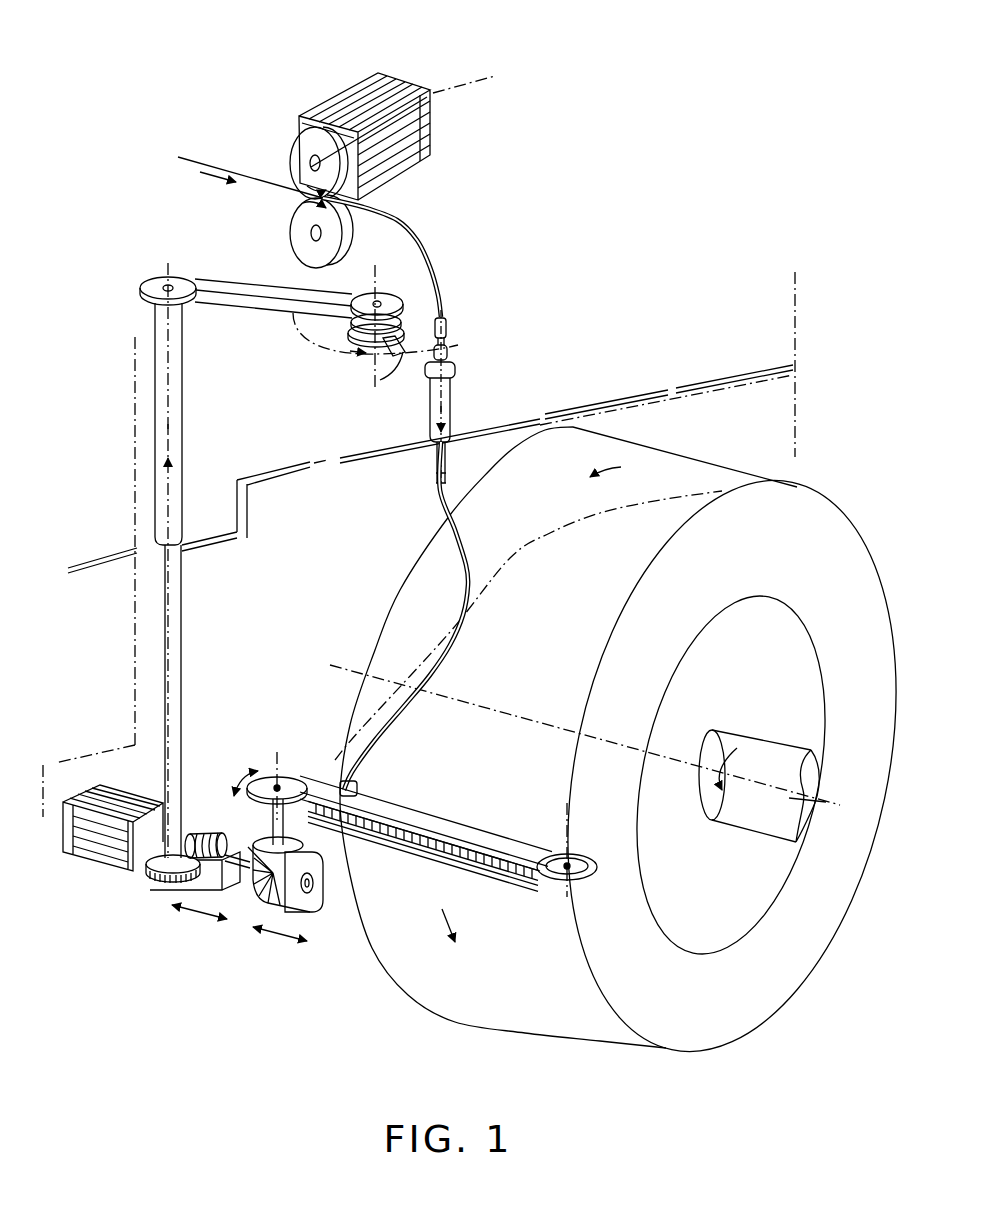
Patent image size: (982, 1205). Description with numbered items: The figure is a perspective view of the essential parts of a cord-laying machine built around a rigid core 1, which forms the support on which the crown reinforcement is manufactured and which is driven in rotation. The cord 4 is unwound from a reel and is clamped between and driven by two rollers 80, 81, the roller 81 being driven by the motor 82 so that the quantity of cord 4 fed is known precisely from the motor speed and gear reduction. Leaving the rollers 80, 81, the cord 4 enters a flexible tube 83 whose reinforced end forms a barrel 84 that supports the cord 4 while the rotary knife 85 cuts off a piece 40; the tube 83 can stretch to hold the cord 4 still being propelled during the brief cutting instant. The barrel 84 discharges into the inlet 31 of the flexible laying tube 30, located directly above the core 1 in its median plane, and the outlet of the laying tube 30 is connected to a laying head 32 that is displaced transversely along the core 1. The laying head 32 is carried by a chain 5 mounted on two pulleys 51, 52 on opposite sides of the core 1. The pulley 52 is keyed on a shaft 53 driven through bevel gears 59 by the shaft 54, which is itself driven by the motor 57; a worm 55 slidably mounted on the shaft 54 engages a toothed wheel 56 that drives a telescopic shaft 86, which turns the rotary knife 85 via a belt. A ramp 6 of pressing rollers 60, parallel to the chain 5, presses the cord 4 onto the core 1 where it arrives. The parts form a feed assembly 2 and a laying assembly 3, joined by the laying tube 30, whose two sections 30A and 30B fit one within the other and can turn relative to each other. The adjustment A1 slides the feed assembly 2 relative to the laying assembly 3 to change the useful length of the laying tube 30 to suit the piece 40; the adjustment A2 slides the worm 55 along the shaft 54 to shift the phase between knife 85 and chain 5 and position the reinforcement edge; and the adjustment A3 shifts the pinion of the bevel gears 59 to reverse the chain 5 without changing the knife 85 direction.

The rigid core 1 is at (770, 557).
The feed assembly 2 is at (125, 455).
The laying assembly 3 is at (121, 677).
The cord 4 is at (200, 158).
The chain 5 is at (418, 800).
The ramp 6 is at (461, 872).
The laying tube 30 is at (420, 502).
The section of laying tube 30A is at (432, 392).
The section of laying tube 30B is at (437, 475).
The inlet 31 is at (448, 355).
The laying head 32 is at (338, 788).
The piece 40 is at (508, 582).
The pulley 51 is at (588, 878).
The pulley 52 is at (276, 778).
The shaft 53 is at (246, 840).
The shaft 54 is at (237, 893).
The worm 55 is at (207, 833).
The toothed wheel 56 is at (159, 876).
The motor 57 is at (102, 858).
The bevel gears 59 is at (327, 896).
The pressing rollers 60 is at (416, 852).
The roller 80 is at (300, 248).
The roller 81 is at (293, 142).
The motor 82 is at (338, 100).
The flexible tube 83 is at (432, 240).
The barrel 84 is at (447, 318).
The rotary knife 85 is at (377, 376).
The telescopic shaft 86 is at (183, 548).
The adjustment A1 is at (174, 441).
The adjustment A2 is at (193, 925).
The adjustment A3 is at (285, 940).